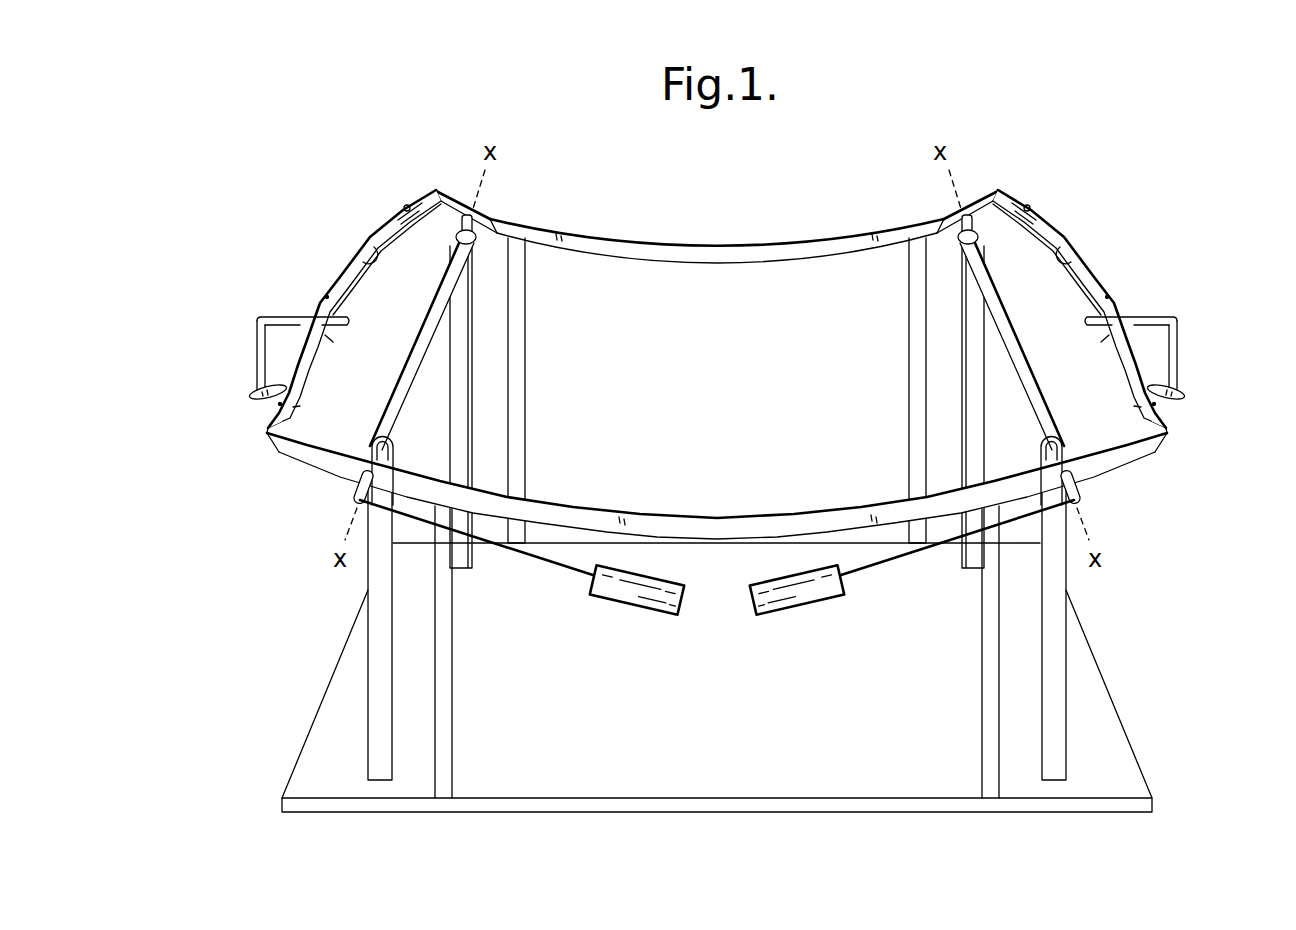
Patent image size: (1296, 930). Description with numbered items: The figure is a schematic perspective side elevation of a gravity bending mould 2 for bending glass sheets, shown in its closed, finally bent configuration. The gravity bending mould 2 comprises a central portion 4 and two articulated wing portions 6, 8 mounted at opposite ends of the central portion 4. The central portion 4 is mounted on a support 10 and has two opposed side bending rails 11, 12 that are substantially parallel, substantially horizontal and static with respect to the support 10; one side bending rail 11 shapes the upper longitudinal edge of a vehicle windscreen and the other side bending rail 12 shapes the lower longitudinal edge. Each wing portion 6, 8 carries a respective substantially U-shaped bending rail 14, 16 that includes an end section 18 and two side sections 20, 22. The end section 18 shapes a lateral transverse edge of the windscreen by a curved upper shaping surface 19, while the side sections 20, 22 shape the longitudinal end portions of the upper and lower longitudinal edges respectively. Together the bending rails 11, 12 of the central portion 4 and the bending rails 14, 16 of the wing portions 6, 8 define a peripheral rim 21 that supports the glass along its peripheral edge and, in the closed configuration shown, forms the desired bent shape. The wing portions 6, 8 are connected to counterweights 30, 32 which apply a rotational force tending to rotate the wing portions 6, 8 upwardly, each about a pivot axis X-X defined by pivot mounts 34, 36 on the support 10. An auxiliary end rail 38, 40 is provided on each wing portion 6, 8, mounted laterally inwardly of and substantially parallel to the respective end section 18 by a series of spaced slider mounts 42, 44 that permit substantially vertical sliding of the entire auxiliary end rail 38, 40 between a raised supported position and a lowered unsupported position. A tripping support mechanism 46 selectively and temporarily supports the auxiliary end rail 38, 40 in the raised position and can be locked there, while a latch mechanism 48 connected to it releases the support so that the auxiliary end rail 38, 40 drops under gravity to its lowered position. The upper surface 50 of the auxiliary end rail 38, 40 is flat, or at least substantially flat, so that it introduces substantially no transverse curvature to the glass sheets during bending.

The gravity bending mould 2 is at (452, 835).
The central portion 4 is at (683, 245).
The wing portion 6 is at (461, 208).
The wing portion 8 is at (978, 200).
The support 10 is at (808, 778).
The side bending rail 11 is at (713, 262).
The side bending rail 12 is at (693, 517).
The bending rail 14 is at (313, 312).
The bending rail 16 is at (1118, 312).
The end section 18 is at (296, 346).
The curved upper shaping surface 19 is at (340, 272).
The side section 20 is at (446, 194).
The peripheral rim 21 is at (588, 243).
The side section 22 is at (298, 446).
The counterweight 30 is at (628, 592).
The counterweight 32 is at (795, 592).
The pivot mount 34 is at (455, 243).
The pivot mount 36 is at (379, 435).
The auxiliary end rail 38 is at (368, 253).
The auxiliary end rail 40 is at (1068, 260).
The slider mount 42 is at (400, 216).
The slider mount 44 is at (1034, 216).
The tripping support mechanism 46 is at (283, 316).
The latch mechanism 48 is at (257, 364).
The upper surface 50 is at (324, 338).